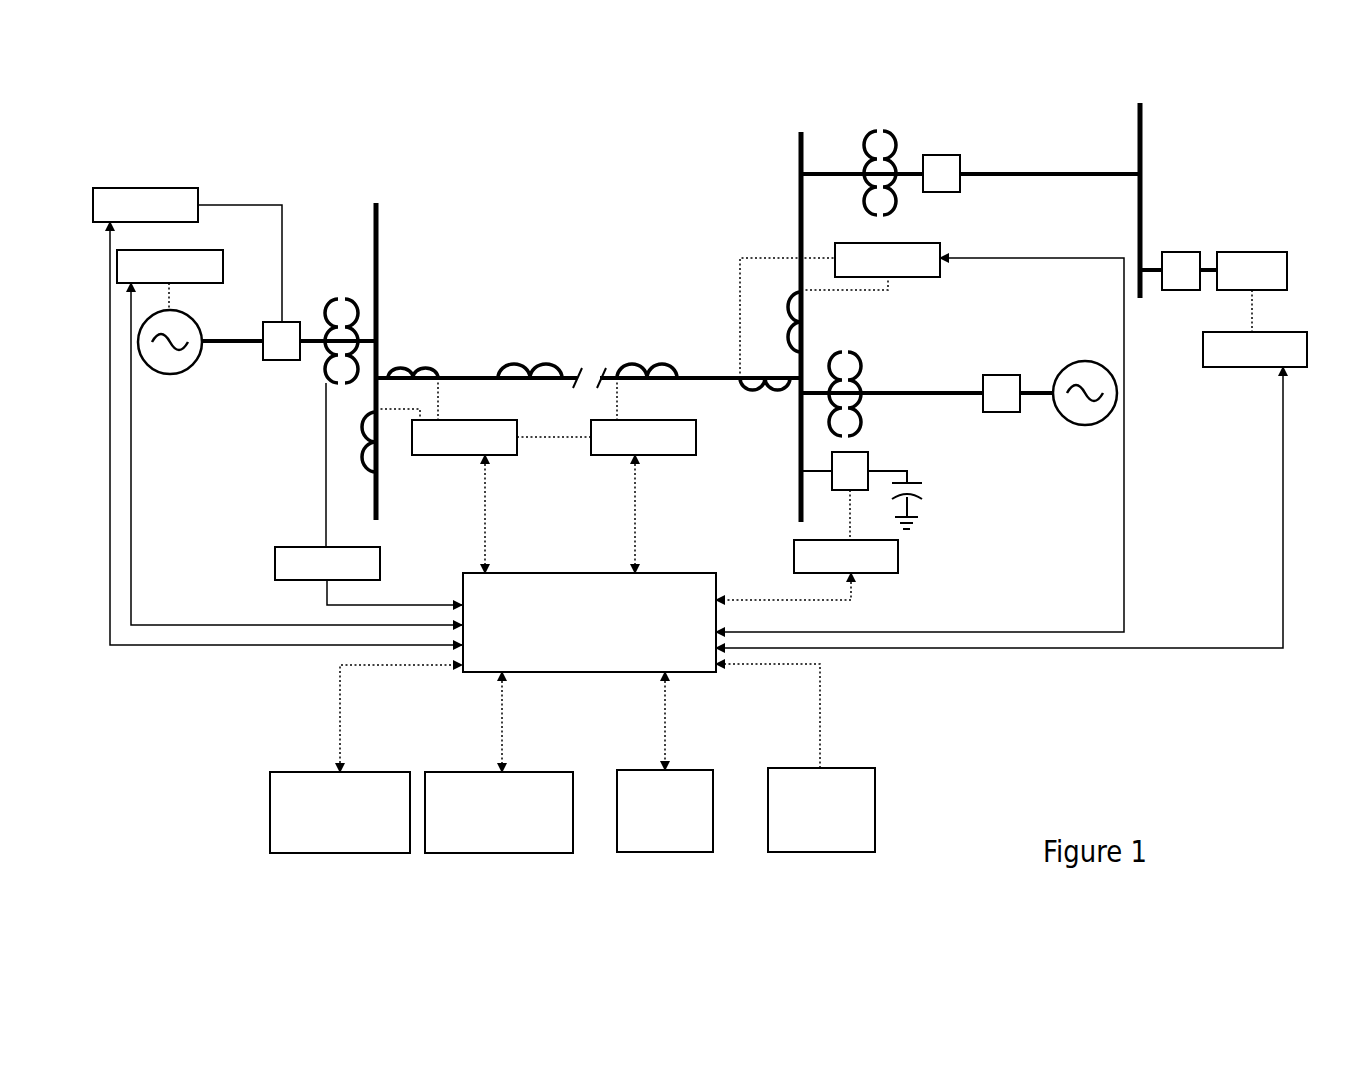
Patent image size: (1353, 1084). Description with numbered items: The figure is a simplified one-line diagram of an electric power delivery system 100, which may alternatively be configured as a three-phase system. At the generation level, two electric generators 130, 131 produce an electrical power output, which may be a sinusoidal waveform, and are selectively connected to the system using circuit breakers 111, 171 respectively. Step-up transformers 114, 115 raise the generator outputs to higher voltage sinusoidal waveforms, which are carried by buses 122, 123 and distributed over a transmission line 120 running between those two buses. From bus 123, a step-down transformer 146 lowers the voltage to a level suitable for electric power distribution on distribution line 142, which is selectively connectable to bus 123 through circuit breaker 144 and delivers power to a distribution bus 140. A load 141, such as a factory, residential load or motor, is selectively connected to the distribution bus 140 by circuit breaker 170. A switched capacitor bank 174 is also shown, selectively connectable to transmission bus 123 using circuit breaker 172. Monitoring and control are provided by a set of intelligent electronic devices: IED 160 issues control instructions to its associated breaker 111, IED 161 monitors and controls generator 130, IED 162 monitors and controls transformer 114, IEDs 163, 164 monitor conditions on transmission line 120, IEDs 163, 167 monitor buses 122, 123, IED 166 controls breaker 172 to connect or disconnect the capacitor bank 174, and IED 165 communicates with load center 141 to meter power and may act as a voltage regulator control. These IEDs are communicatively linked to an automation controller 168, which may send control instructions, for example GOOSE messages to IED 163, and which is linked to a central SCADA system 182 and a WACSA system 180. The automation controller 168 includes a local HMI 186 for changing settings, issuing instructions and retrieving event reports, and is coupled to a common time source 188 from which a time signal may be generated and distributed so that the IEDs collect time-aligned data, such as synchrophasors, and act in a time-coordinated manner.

The electric power delivery system 100 is at (572, 188).
The circuit breaker 111 is at (280, 363).
The step-up transformer 114 is at (352, 292).
The step-up transformer 115 is at (862, 353).
The transmission line 120 is at (462, 375).
The bus 122 is at (383, 236).
The bus 123 is at (798, 453).
The electric generator 130 is at (195, 310).
The electric generator 131 is at (1085, 427).
The distribution bus 140 is at (1145, 187).
The load 141 is at (1253, 252).
The distribution line 142 is at (1035, 173).
The circuit breaker 144 is at (942, 155).
The step-down transformer 146 is at (875, 130).
The IED 160 is at (160, 186).
The IED 161 is at (200, 248).
The IED 162 is at (300, 543).
The IED 163 is at (467, 455).
The IED 164 is at (620, 455).
The IED 165 is at (1210, 368).
The IED 166 is at (793, 543).
The IED 167 is at (887, 237).
The automation controller 168 is at (589, 622).
The circuit breaker 170 is at (1180, 250).
The circuit breaker 171 is at (998, 373).
The circuit breaker 172 is at (862, 447).
The switched capacitor bank 174 is at (913, 481).
The WACSA system 180 is at (360, 855).
The SCADA system 182 is at (475, 855).
The local HMI 186 is at (703, 855).
The common time source 188 is at (823, 855).